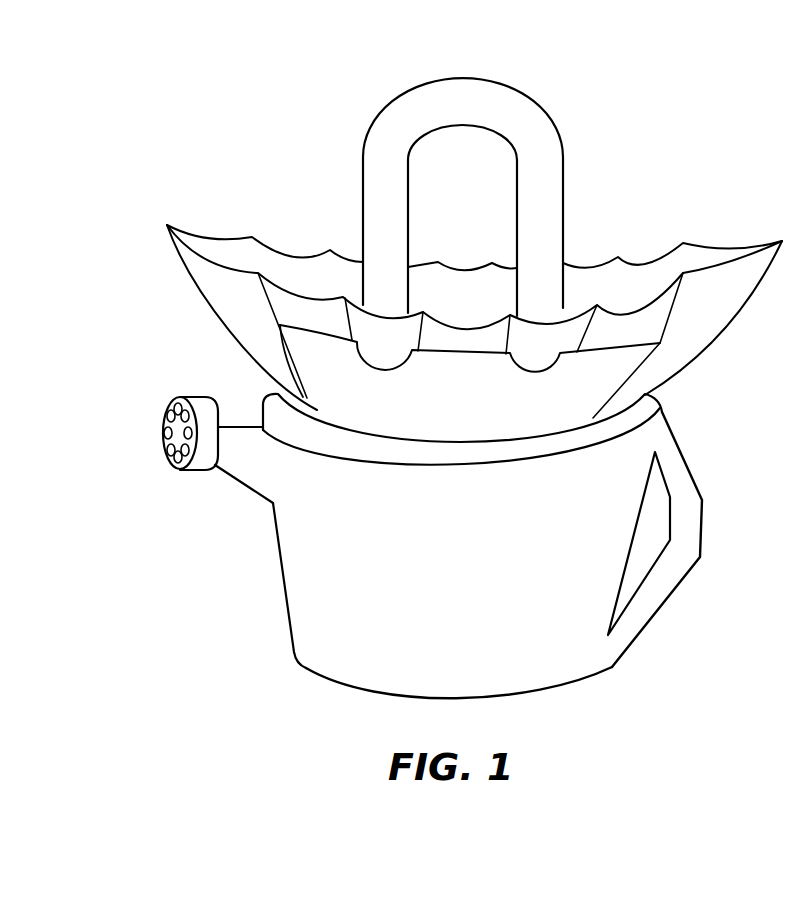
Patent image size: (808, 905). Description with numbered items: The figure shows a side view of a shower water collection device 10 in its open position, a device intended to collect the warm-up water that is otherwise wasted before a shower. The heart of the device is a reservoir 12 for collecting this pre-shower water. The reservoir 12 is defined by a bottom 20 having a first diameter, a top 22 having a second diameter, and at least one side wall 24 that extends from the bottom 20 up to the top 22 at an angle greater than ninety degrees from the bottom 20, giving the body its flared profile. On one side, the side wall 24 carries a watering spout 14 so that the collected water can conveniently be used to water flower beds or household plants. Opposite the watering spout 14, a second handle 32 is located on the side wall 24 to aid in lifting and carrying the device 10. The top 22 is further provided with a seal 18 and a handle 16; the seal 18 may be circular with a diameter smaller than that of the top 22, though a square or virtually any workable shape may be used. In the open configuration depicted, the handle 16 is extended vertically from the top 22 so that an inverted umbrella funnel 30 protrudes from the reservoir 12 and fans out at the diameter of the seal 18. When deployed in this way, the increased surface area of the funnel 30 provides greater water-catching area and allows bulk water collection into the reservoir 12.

The shower water collection device 10 is at (262, 98).
The reservoir 12 is at (438, 574).
The watering spout 14 is at (180, 428).
The handle 16 is at (476, 114).
The seal 18 is at (438, 409).
The bottom 20 is at (582, 682).
The top 22 is at (660, 402).
The side wall 24 is at (285, 577).
The inverted umbrella funnel 30 is at (278, 252).
The second handle 32 is at (703, 536).